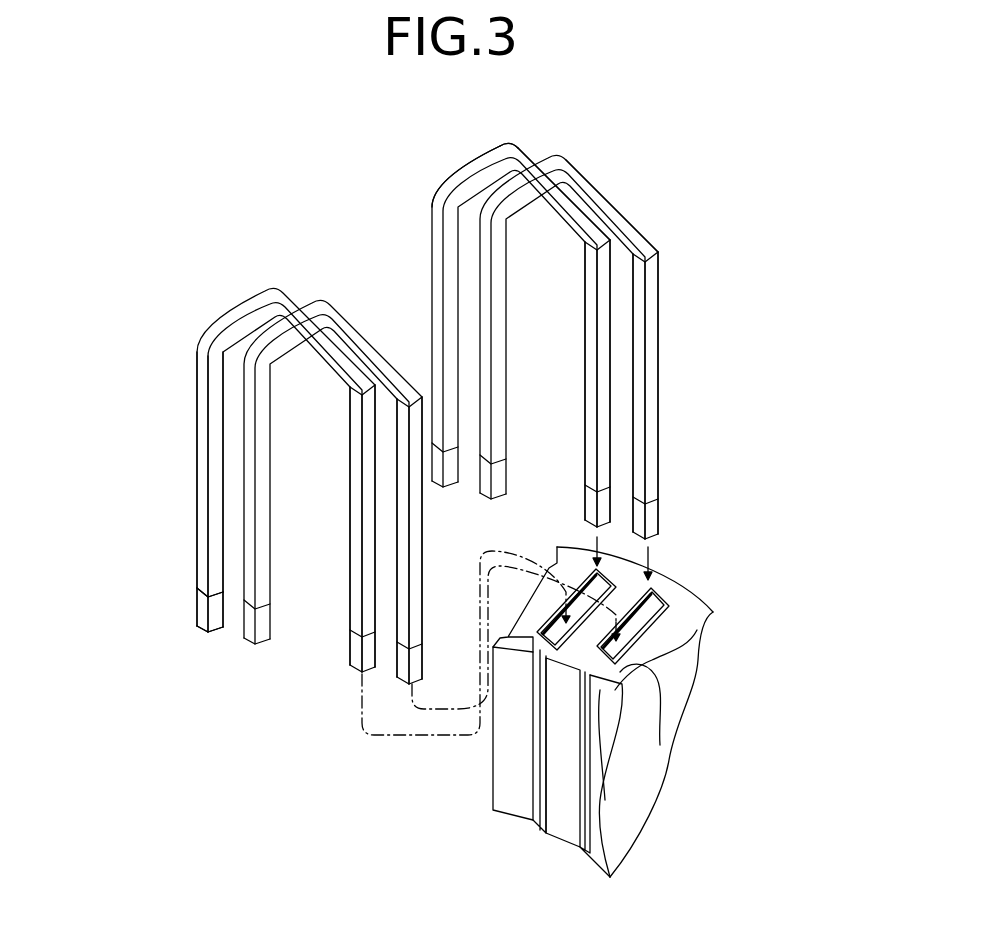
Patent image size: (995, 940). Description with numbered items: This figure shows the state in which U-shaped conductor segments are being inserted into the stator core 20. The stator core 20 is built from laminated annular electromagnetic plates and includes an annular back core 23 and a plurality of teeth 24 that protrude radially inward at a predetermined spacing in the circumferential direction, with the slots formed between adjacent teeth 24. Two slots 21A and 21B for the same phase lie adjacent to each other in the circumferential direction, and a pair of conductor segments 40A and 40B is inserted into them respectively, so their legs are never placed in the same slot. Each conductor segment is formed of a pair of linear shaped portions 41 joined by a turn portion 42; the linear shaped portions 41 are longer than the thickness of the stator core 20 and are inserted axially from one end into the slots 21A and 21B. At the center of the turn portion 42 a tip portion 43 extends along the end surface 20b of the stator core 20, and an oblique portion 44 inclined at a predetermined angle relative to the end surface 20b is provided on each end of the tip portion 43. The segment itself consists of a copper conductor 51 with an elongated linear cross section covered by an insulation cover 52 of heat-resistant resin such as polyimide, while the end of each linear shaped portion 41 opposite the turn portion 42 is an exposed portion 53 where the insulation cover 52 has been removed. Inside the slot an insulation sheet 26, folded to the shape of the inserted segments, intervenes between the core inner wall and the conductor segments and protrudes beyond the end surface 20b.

The stator core 20 is at (659, 722).
The end surface of the stator core 20b is at (677, 627).
The first slot 21A is at (585, 802).
The second slot 21B is at (544, 765).
The back core 23 is at (690, 600).
The tooth 24 is at (600, 745).
The insulation sheet 26 is at (665, 652).
The conductor segment 40A is at (372, 312).
The conductor segment 40B is at (244, 310).
The linear shaped portion 41 is at (403, 507).
The turn portion 42 is at (605, 188).
The tip portion 43 is at (578, 142).
The oblique portion 44 is at (545, 158).
The conductor 51 is at (204, 610).
The insulation cover 52 is at (206, 569).
The exposed portion 53 is at (162, 610).